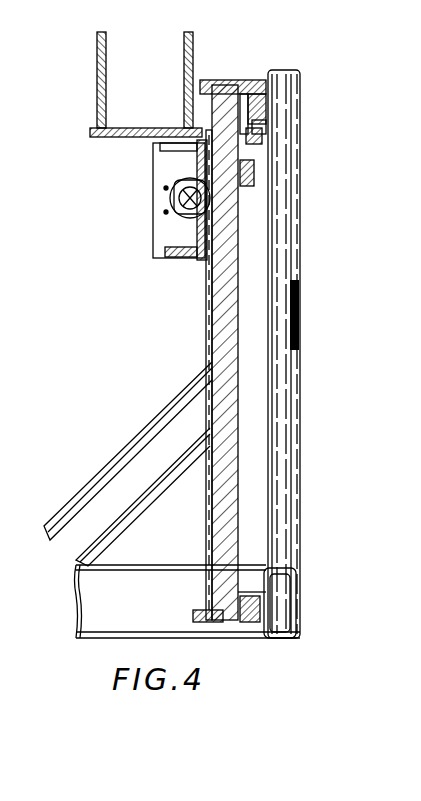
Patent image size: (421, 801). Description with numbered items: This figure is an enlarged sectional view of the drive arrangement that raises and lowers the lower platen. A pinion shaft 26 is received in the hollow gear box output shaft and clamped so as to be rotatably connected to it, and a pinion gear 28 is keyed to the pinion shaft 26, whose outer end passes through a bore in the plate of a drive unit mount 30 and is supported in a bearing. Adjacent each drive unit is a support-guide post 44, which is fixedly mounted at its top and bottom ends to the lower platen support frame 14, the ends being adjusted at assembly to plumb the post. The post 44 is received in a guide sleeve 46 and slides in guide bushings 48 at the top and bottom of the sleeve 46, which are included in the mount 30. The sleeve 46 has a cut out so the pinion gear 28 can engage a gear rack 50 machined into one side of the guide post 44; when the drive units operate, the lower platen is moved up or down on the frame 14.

The lower platen support frame 14 is at (298, 478).
The pinion shaft 26 is at (172, 190).
The pinion gear 28 is at (192, 208).
The drive unit mount 30 is at (140, 154).
The support-guide post 44 is at (226, 306).
The guide sleeve 46 is at (248, 182).
The guide bushings 48 is at (200, 150).
The gear rack 50 is at (212, 338).